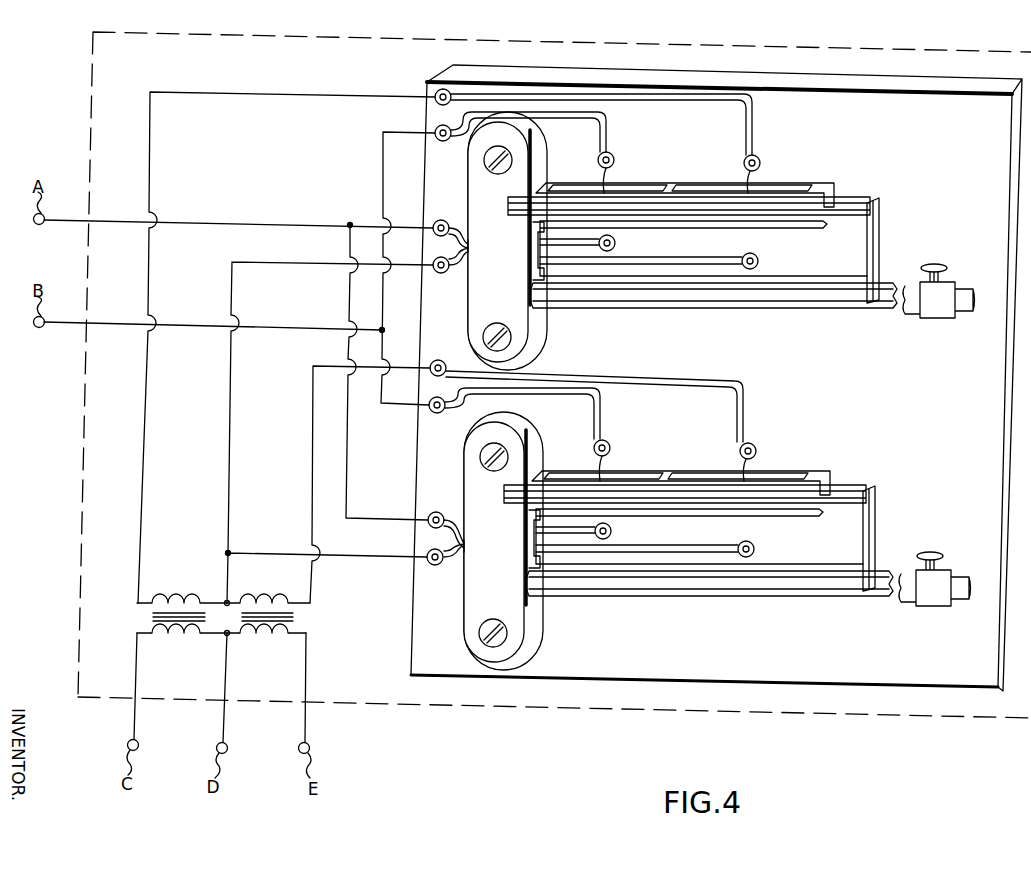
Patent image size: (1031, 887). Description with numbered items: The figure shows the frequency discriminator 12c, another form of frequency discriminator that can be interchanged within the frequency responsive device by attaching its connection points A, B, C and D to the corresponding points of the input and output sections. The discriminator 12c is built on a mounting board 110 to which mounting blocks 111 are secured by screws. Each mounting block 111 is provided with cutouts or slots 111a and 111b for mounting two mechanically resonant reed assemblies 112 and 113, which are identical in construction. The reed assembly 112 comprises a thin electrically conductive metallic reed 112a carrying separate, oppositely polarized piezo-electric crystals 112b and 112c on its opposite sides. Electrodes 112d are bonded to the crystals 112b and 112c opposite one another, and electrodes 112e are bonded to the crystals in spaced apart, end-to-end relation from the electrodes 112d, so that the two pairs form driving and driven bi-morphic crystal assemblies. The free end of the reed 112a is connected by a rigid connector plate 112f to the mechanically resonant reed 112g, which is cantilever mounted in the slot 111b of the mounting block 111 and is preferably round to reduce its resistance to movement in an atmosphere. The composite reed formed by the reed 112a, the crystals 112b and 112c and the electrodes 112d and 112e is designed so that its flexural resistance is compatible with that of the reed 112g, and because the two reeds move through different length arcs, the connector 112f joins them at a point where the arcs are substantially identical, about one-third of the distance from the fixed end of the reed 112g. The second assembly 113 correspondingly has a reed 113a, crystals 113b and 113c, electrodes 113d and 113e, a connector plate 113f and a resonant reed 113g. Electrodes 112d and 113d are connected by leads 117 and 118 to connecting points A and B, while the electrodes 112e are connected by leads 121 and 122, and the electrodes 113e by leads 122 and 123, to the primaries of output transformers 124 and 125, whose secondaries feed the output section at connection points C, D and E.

The frequency discriminator 12c is at (92, 78).
The mounting board 110 is at (975, 165).
The mounting block 111 is at (470, 186).
The slot 111a is at (489, 394).
The slot 111b is at (534, 283).
The reed assembly 112 is at (741, 239).
The reed 112a is at (862, 198).
The piezo-electric crystal 112b is at (770, 190).
The piezo-electric crystal 112c is at (781, 228).
The electrode 112d is at (632, 193).
The electrode 112e is at (695, 193).
The connector plate 112f is at (880, 240).
The mechanically resonant reed 112g is at (800, 308).
The reed assembly 113 is at (737, 531).
The reed 113a is at (856, 488).
The piezo-electric crystal 113b is at (767, 476).
The piezo-electric crystal 113c is at (777, 517).
The electrode 113d is at (627, 480).
The electrode 113e is at (690, 480).
The connector plate 113f is at (876, 530).
The mechanically resonant reed 113g is at (802, 607).
The lead 117 is at (283, 328).
The lead 118 is at (282, 222).
The lead 121 is at (141, 528).
The lead 122 is at (228, 575).
The lead 123 is at (312, 497).
The output transformer 124 is at (152, 620).
The output transformer 125 is at (296, 624).